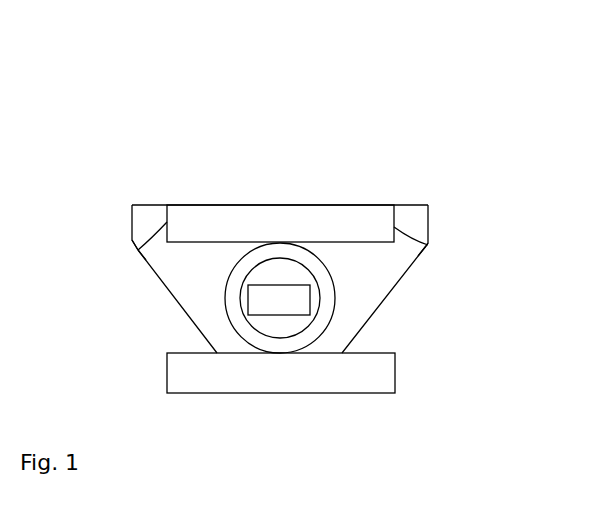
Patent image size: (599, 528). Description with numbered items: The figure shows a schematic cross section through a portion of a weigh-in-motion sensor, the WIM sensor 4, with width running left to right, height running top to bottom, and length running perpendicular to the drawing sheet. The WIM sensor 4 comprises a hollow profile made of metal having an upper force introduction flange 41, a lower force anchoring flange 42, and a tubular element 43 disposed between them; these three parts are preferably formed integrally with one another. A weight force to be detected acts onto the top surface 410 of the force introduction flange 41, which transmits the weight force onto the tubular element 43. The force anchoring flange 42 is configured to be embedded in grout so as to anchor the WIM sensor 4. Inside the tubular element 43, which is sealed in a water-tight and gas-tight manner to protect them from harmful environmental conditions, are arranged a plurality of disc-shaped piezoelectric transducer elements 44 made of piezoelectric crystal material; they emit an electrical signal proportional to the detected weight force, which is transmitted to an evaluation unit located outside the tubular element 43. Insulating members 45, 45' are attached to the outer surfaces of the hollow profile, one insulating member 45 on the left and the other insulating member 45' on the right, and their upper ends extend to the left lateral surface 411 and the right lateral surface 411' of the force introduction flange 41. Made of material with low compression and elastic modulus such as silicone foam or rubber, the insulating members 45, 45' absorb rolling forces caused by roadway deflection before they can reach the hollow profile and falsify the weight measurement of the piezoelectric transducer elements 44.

The WIM sensor 4 is at (97, 212).
The top surface 410 is at (247, 206).
The force introduction flange 41 is at (220, 221).
The force anchoring flange 42 is at (285, 378).
The tubular element 43 is at (325, 297).
The piezoelectric transducer elements 44 is at (275, 295).
The insulating member 45 is at (149, 190).
The insulating member 45' is at (412, 188).
The left lateral surface 411 is at (103, 267).
The right lateral surface 411' is at (468, 258).